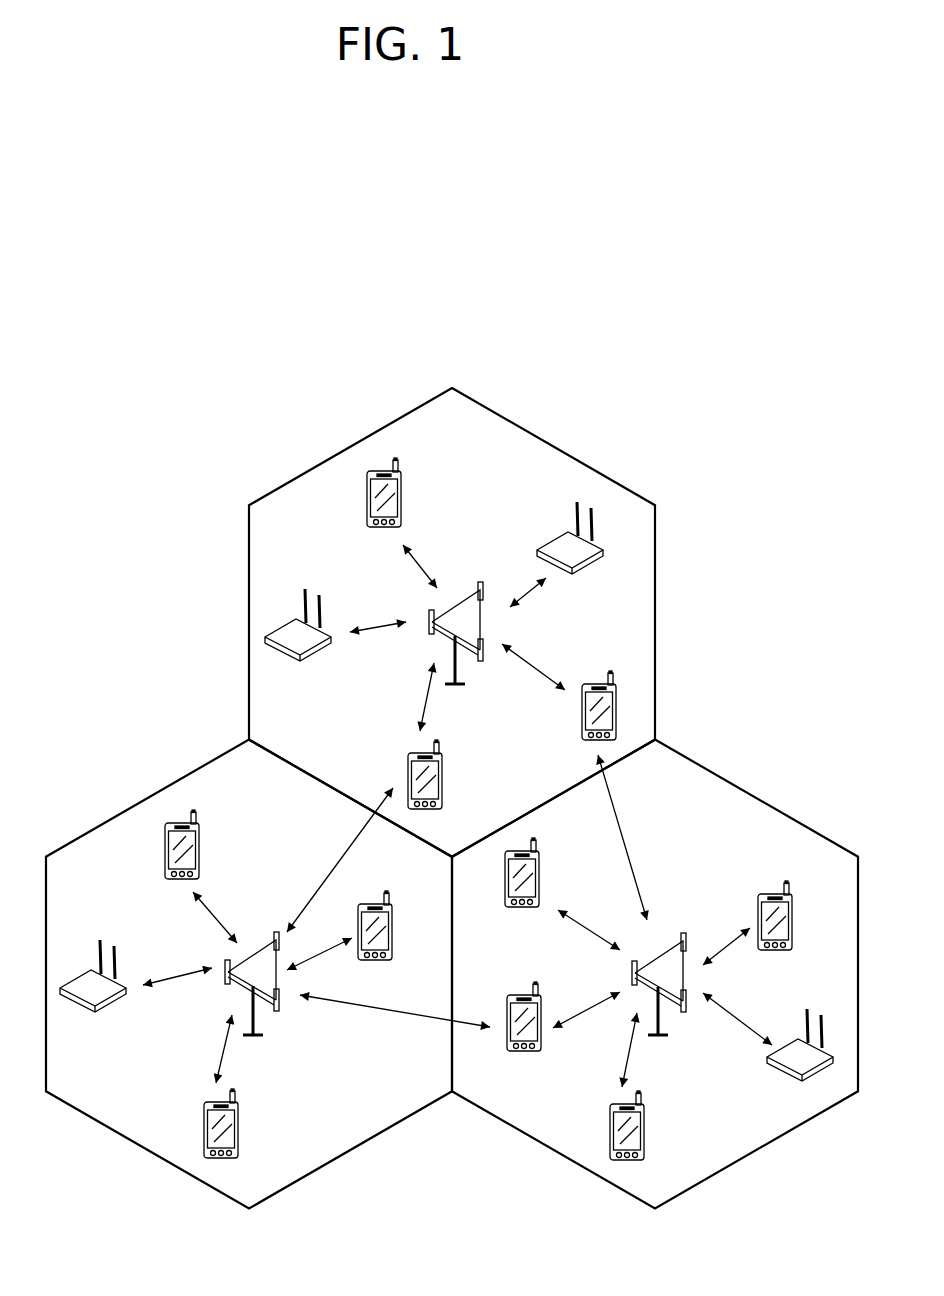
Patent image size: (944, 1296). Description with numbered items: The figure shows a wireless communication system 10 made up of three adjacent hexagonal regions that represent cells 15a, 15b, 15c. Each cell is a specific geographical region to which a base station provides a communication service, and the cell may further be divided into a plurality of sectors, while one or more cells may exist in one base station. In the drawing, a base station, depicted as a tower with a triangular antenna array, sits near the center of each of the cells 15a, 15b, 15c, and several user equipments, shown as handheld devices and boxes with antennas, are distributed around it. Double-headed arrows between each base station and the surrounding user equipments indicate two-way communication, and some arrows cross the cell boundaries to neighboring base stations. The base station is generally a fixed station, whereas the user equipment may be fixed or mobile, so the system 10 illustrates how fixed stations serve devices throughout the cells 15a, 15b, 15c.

The wireless communication system 10 is at (738, 512).
The cell 15a is at (657, 610).
The cell 15b is at (782, 812).
The cell 15c is at (121, 813).